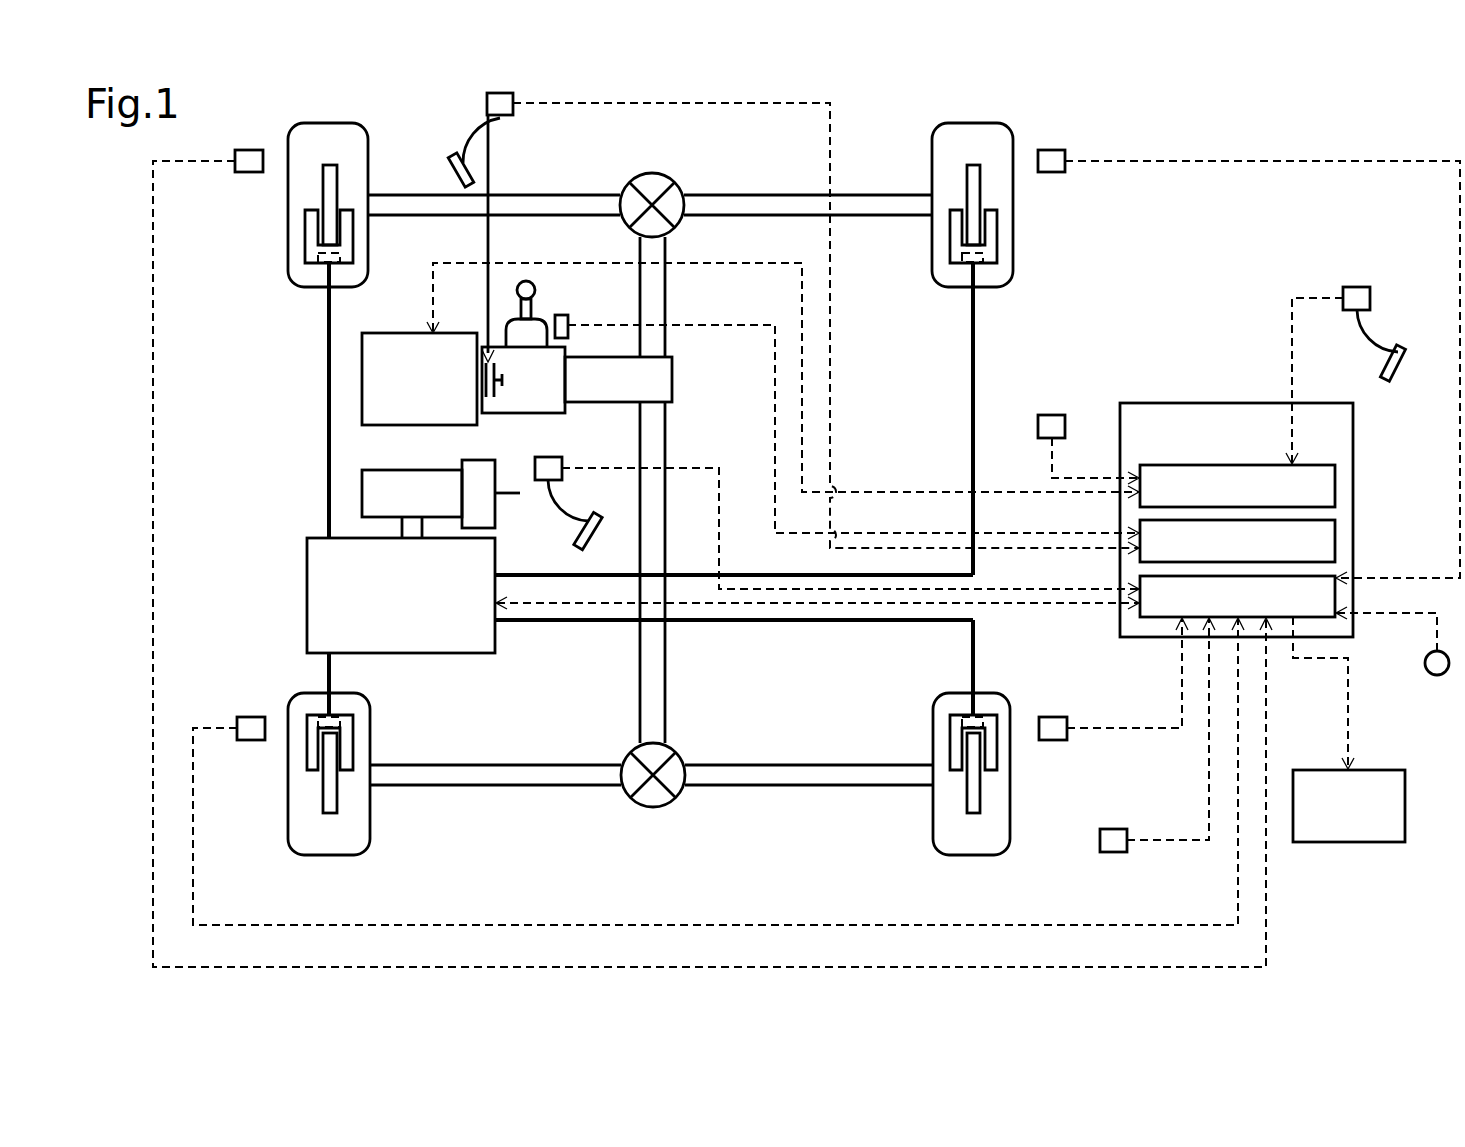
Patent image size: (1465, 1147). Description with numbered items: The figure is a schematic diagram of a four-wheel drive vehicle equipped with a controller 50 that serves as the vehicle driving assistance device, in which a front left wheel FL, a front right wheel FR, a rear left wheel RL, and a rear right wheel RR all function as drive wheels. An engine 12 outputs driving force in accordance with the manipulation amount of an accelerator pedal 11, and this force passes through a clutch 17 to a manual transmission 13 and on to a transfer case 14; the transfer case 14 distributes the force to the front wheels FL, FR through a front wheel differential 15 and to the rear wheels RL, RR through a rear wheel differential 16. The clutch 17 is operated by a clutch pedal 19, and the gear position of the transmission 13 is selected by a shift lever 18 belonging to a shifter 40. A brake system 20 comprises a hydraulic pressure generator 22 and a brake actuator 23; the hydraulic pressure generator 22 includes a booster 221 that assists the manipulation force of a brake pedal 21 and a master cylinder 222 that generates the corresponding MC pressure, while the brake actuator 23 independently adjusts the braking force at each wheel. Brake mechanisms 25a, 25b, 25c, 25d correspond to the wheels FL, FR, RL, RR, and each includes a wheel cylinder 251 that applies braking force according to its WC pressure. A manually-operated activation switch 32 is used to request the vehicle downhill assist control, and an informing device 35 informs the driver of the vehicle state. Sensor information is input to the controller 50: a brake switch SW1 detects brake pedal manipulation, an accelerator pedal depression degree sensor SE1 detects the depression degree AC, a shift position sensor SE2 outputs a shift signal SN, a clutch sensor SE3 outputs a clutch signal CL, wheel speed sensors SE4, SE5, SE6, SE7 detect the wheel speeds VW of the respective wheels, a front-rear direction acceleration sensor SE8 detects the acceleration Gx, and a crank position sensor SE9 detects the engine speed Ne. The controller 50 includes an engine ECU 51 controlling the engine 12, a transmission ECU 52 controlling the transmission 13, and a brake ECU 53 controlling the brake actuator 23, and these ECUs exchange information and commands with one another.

The accelerator pedal 11 is at (1401, 376).
The engine 12 is at (362, 380).
The transmission 13 is at (505, 413).
The transfer case 14 is at (672, 378).
The front wheel differential 15 is at (632, 180).
The rear wheel differential 16 is at (660, 807).
The clutch 17 is at (498, 388).
The shift lever 18 is at (527, 280).
The clutch pedal 19 is at (459, 155).
The brake system 20 is at (298, 537).
The brake pedal 21 is at (586, 523).
The hydraulic pressure generator 22 is at (391, 469).
The brake actuator 23 is at (470, 653).
The brake mechanism 25a is at (296, 269).
The brake mechanism 25b is at (1000, 264).
The brake mechanism 25c is at (359, 734).
The brake mechanism 25d is at (949, 710).
The activation switch 32 is at (1437, 675).
The informing device 35 is at (1367, 842).
The shifter 40 is at (550, 307).
The controller 50 is at (1205, 403).
The engine ECU 51 is at (1335, 486).
The transmission ECU 52 is at (1335, 541).
The brake ECU 53 is at (1140, 617).
The booster 221 is at (495, 505).
The master cylinder 222 is at (362, 492).
The wheel cylinder 251 is at (352, 258).
The accelerator pedal depression degree sensor SE1 is at (1357, 287).
The shift position sensor SE2 is at (567, 318).
The clutch sensor SE3 is at (513, 96).
The wheel speed sensor SE4 is at (249, 172).
The wheel speed sensor SE5 is at (1052, 172).
The wheel speed sensor SE6 is at (251, 740).
The wheel speed sensor SE7 is at (1053, 740).
The front-rear direction acceleration sensor SE8 is at (1112, 852).
The crank position sensor SE9 is at (1052, 415).
The brake switch SW1 is at (562, 462).
The front left wheel FL is at (368, 128).
The front right wheel FR is at (932, 130).
The rear left wheel RL is at (330, 855).
The rear right wheel RR is at (972, 855).